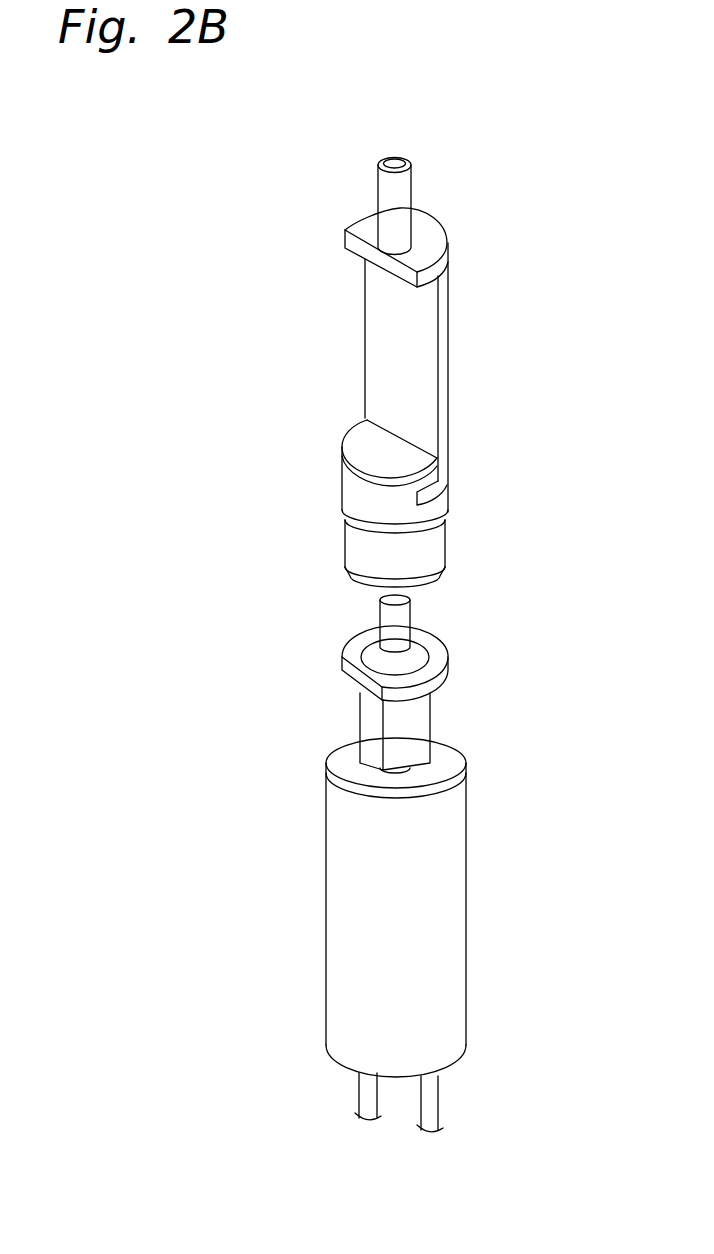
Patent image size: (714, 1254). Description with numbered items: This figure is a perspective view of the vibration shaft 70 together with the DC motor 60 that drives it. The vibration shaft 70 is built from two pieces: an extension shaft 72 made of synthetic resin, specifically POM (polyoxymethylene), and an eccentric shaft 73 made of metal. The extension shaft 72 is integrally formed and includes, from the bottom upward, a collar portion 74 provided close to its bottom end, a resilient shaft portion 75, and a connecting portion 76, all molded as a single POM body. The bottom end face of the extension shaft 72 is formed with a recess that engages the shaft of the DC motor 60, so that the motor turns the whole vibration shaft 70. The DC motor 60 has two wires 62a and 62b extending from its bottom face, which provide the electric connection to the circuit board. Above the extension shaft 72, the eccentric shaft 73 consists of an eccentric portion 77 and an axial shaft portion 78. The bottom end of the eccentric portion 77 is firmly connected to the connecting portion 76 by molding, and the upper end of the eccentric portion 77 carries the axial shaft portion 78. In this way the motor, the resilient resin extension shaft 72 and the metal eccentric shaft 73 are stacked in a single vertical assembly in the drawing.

The DC motor 60 is at (336, 918).
The wire 62a is at (366, 1097).
The wire 62b is at (433, 1103).
The vibration shaft 70 is at (555, 155).
The extension shaft 72 is at (298, 433).
The eccentric shaft 73 is at (470, 155).
The collar portion 74 is at (435, 663).
The resilient shaft portion 75 is at (400, 615).
The connecting portion 76 is at (433, 553).
The eccentric portion 77 is at (385, 327).
The axial shaft portion 78 is at (385, 195).